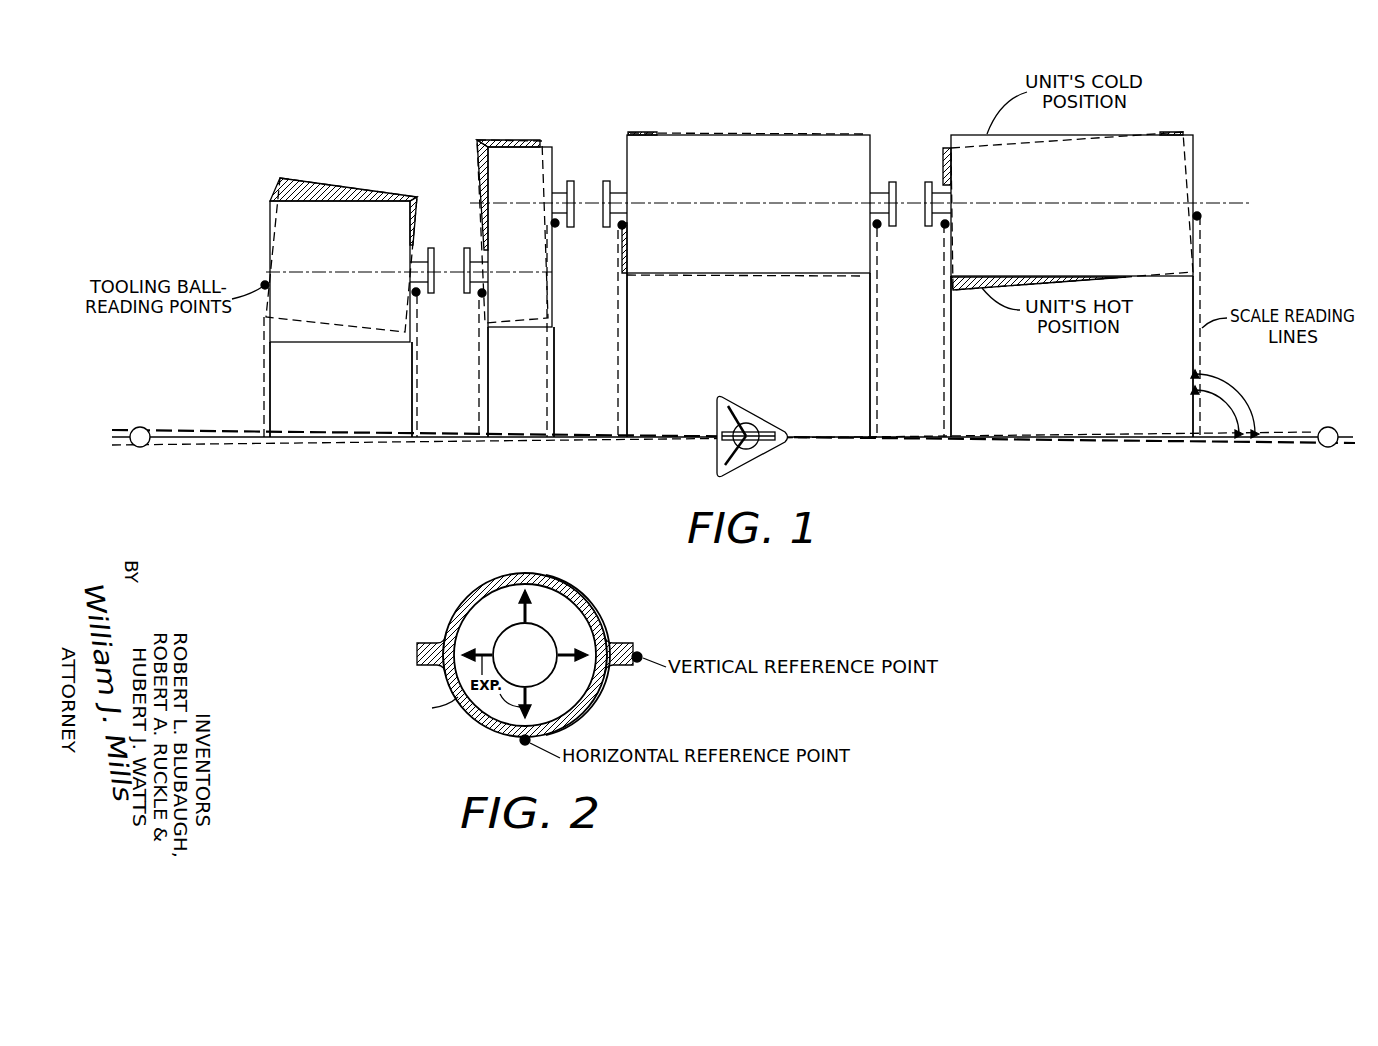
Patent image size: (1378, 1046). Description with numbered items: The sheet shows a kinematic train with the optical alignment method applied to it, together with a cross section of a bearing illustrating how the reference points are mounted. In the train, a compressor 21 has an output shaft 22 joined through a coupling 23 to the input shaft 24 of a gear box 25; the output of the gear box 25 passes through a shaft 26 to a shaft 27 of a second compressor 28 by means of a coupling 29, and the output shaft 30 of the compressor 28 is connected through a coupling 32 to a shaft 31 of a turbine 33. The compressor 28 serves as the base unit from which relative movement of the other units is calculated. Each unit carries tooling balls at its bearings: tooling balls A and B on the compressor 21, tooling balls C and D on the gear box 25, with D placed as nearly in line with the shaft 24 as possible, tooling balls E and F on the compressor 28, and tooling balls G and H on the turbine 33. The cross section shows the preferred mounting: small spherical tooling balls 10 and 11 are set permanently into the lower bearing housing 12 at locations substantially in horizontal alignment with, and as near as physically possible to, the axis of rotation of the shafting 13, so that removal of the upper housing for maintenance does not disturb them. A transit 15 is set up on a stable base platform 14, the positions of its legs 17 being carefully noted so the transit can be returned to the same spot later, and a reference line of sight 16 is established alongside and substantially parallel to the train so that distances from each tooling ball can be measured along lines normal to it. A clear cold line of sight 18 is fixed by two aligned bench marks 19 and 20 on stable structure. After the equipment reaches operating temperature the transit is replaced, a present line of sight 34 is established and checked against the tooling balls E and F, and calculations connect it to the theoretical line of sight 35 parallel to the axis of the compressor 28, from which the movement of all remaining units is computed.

In FIG. 2, the tooling ball 10 is at (634, 661).
In FIG. 2, the tooling ball 11 is at (521, 743).
In FIG. 2, the lower bearing housing 12 is at (585, 708).
In FIG. 2, the shafting 13 is at (507, 636).
In FIG. 1, the base platform 14 is at (762, 465).
In FIG. 1, the transit 15 is at (748, 423).
In FIG. 1, the reference line of sight 16 is at (822, 440).
In FIG. 1, the legs 17 is at (725, 459).
In FIG. 1, the line of sight 18 is at (1270, 432).
In FIG. 1, the bench mark 19 is at (145, 427).
In FIG. 1, the bench mark 20 is at (1327, 446).
In FIG. 1, the compressor 21 is at (283, 230).
In FIG. 1, the output shaft 22 is at (410, 277).
In FIG. 1, the coupling 23 is at (441, 252).
In FIG. 1, the input shaft 24 is at (481, 277).
In FIG. 1, the gear box 25 is at (533, 163).
In FIG. 1, the shaft 26 is at (555, 198).
In FIG. 1, the shaft 27 is at (622, 210).
In FIG. 1, the compressor 28 is at (585, 188).
In FIG. 1, the coupling 29 is at (757, 147).
In FIG. 1, the shaft 30 is at (873, 210).
In FIG. 1, the shaft 31 is at (945, 208).
In FIG. 1, the coupling 32 is at (908, 188).
In FIG. 1, the turbine 33 is at (1173, 161).
In FIG. 1, the present line of sight 34 is at (1130, 432).
In FIG. 1, the theoretical line of sight 35 is at (1132, 444).
In FIG. 1, the tooling ball A is at (263, 283).
In FIG. 1, the tooling ball B is at (418, 295).
In FIG. 1, the tooling ball C is at (480, 296).
In FIG. 1, the tooling ball D is at (557, 226).
In FIG. 1, the tooling ball E is at (620, 228).
In FIG. 1, the tooling ball F is at (880, 227).
In FIG. 1, the tooling ball G is at (943, 228).
In FIG. 1, the tooling ball H is at (1203, 217).